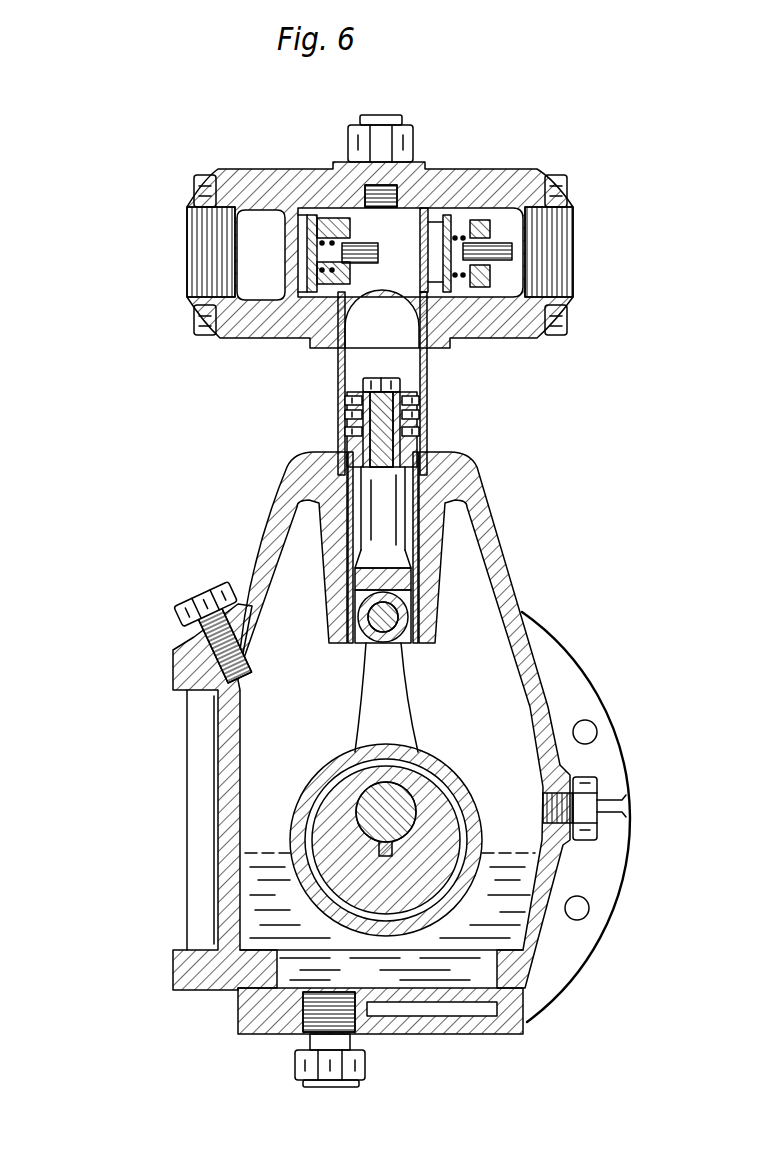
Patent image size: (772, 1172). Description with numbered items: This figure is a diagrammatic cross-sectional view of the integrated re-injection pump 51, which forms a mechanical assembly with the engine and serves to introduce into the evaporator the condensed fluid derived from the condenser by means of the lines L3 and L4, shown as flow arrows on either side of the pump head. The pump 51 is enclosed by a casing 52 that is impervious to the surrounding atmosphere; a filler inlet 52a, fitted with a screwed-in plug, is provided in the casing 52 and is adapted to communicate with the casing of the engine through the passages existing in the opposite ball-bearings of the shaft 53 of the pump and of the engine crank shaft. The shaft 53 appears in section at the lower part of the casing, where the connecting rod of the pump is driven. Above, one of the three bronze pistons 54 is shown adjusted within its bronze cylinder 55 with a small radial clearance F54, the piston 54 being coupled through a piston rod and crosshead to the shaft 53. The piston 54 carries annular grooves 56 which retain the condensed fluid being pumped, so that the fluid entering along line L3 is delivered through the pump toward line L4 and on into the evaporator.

The re-injection pump 51 is at (520, 460).
The casing 52 is at (208, 972).
The filler inlet 52a is at (200, 596).
The shaft 53 is at (395, 803).
The piston 54 is at (402, 392).
The cylinder 55 is at (427, 355).
The annular grooves 56 is at (343, 428).
The radial clearance F54 is at (349, 390).
The line L3 is at (145, 253).
The line L4 is at (700, 250).